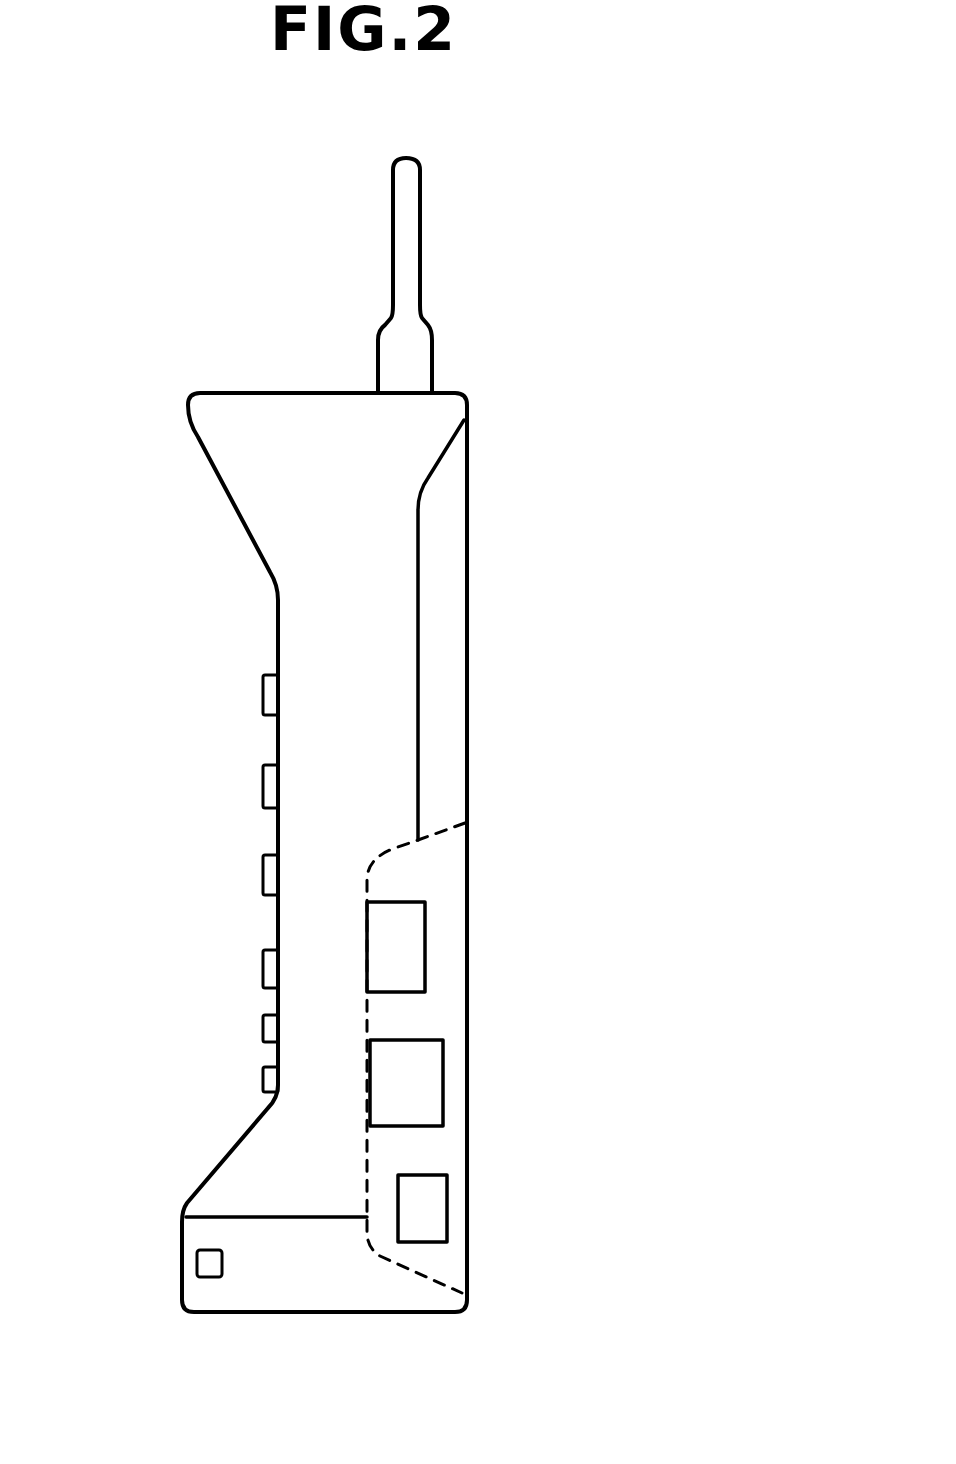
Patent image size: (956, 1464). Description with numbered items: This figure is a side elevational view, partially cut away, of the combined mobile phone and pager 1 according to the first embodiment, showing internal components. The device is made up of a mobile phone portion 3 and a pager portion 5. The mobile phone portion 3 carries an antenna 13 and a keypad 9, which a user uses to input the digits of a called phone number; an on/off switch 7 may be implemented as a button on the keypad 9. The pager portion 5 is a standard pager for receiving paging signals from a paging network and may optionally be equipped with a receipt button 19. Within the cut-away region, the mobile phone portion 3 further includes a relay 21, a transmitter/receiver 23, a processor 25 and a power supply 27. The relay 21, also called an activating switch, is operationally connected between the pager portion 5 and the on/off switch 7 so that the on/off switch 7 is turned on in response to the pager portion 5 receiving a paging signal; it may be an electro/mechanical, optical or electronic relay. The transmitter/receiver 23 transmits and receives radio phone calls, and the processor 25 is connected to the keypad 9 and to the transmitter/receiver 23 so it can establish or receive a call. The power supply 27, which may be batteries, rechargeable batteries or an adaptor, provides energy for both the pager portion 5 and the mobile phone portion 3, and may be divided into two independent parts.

The combined mobile phone and pager 1 is at (592, 345).
The mobile phone portion 3 is at (472, 745).
The pager portion 5 is at (176, 1298).
The on/off switch 7 is at (268, 1097).
The keypad 9 is at (215, 643).
The antenna 13 is at (407, 268).
The receipt button 19 is at (197, 1262).
The relay 21 is at (435, 1200).
The transmitter/receiver 23 is at (412, 944).
The processor 25 is at (423, 1078).
The power supply 27 is at (437, 628).